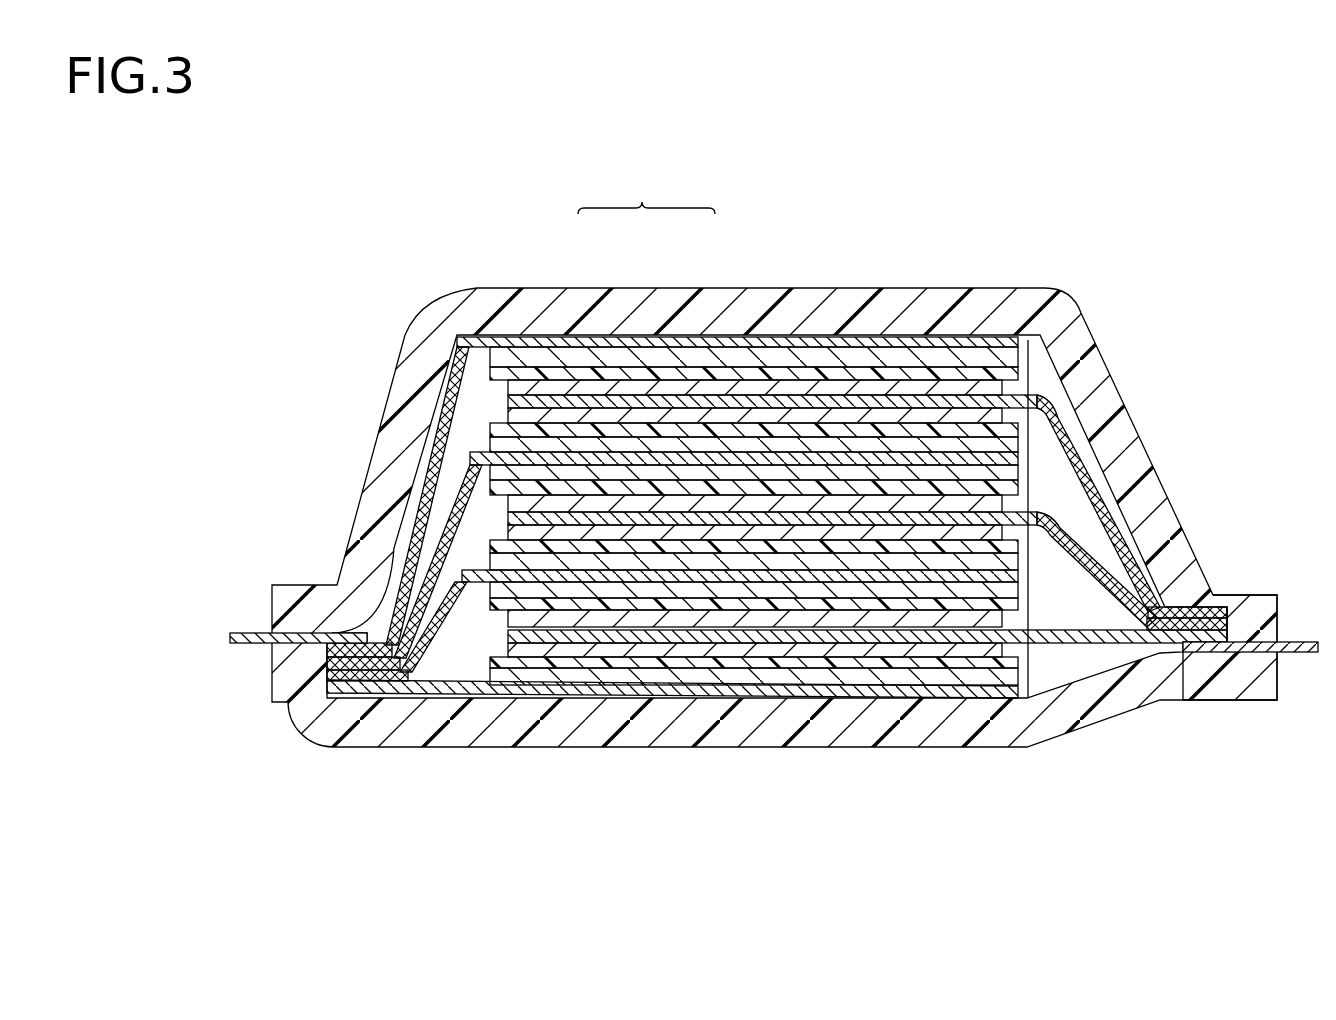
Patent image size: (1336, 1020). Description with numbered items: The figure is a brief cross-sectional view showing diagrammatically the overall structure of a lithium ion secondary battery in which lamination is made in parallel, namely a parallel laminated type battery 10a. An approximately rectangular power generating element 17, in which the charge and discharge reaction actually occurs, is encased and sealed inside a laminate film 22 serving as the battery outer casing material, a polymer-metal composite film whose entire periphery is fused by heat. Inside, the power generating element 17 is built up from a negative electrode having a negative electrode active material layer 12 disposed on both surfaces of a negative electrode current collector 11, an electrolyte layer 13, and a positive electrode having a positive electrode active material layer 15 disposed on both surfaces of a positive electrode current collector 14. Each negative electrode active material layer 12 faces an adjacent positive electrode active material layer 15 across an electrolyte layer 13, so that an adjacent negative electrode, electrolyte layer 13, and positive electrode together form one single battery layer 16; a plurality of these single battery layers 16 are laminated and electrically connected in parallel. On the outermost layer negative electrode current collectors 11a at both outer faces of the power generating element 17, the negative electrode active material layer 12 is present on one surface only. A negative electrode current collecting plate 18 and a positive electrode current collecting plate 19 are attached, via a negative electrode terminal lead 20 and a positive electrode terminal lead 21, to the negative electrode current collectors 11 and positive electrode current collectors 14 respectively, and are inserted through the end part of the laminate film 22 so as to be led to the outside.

The parallel laminated type battery 10a is at (300, 168).
The negative electrode current collector 11 is at (862, 450).
The outermost layer negative electrode current collector 11a is at (930, 345).
The negative electrode active material layer 12 is at (590, 355).
The electrolyte layer 13 is at (648, 372).
The positive electrode current collector 14 is at (768, 402).
The positive electrode active material layer 15 is at (695, 385).
The single battery layer 16 is at (646, 189).
The power generating element 17 is at (1040, 570).
The negative electrode current collecting plate 18 is at (245, 632).
The positive electrode current collecting plate 19 is at (1302, 641).
The negative electrode terminal lead 20 is at (440, 415).
The positive electrode terminal lead 21 is at (1085, 462).
The laminate film 22 is at (1250, 594).